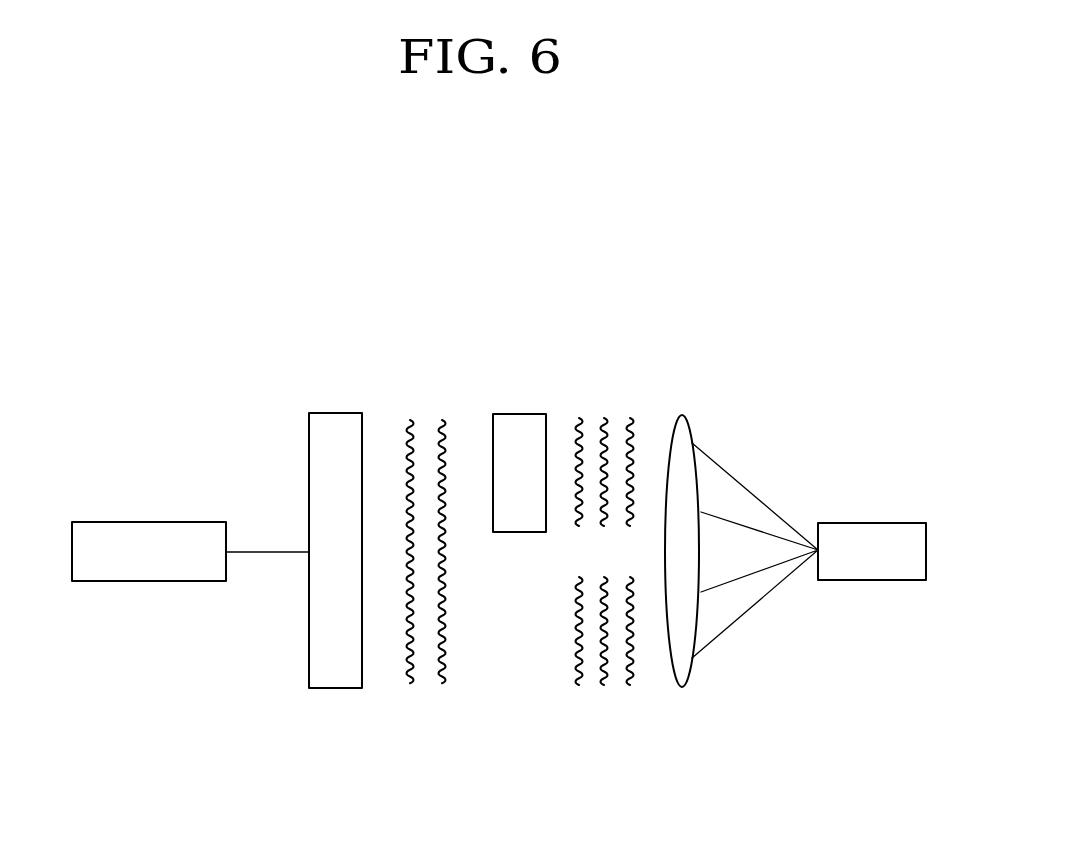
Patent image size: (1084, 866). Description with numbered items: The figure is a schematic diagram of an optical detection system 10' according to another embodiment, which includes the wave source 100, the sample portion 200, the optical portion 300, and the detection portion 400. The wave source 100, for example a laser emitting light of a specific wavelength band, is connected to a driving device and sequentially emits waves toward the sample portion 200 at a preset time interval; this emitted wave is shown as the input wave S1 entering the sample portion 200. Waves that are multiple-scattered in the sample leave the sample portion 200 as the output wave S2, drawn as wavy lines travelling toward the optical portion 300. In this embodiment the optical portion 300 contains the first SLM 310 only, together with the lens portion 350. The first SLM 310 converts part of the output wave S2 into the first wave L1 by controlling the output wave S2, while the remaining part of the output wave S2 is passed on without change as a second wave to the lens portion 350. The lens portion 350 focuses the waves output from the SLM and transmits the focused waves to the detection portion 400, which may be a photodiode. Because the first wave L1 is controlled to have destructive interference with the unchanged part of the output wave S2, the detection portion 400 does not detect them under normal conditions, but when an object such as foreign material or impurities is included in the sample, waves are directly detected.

The optical detection system 10' is at (775, 321).
The wave source 100 is at (116, 581).
The input wave S1 is at (267, 552).
The sample portion 200 is at (335, 688).
The output wave S2 is at (421, 703).
The optical portion 300 is at (507, 780).
The first SLM 310 is at (519, 414).
The first wave L1 is at (618, 410).
The lens portion 350 is at (681, 687).
The detection portion 400 is at (883, 580).